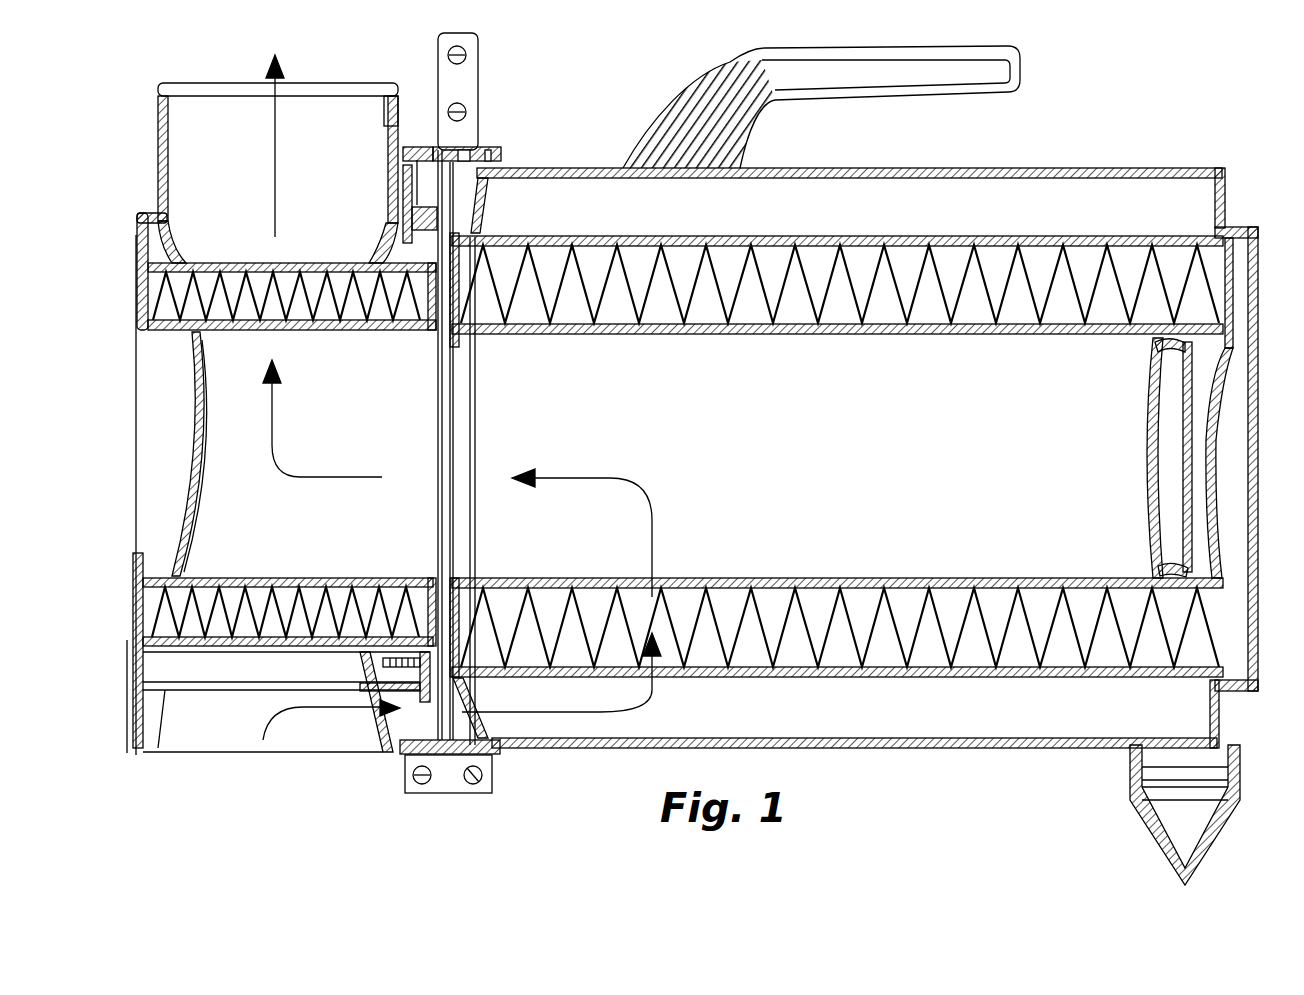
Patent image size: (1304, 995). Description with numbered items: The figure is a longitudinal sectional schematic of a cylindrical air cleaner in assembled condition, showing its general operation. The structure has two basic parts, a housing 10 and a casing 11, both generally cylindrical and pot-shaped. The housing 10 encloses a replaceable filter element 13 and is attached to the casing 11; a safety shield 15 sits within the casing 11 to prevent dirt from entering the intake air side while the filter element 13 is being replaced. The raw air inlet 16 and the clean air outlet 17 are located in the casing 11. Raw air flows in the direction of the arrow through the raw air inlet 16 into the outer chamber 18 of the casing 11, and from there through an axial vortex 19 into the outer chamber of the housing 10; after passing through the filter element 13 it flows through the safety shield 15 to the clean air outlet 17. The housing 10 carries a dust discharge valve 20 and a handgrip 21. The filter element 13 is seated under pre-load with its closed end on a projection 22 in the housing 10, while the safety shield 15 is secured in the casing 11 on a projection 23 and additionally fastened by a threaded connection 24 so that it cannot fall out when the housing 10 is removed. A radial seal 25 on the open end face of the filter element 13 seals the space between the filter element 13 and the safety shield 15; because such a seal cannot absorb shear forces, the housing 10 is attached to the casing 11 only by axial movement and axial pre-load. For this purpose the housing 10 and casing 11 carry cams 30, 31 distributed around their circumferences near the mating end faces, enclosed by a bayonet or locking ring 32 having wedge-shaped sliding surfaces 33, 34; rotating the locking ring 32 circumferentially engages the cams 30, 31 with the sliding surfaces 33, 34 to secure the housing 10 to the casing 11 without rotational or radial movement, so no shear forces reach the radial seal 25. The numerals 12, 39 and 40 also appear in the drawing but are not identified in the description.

The housing 10 is at (948, 168).
The casing 11 is at (145, 228).
The lower chamber wall 12 is at (150, 650).
The filter element 13 is at (918, 330).
The safety shield 15 is at (253, 627).
The raw air inlet 16 is at (295, 735).
The clean air outlet 17 is at (305, 115).
The outer chamber 18 is at (385, 722).
The axial vortex 19 is at (475, 735).
The dust discharge valve 20 is at (1130, 822).
The handgrip 21 is at (1003, 55).
The projection 22 is at (1240, 350).
The projection 23 is at (153, 342).
The threaded connection 24 is at (383, 662).
The radial seal 25 is at (440, 585).
The cam 30 is at (462, 140).
The cam 31 is at (433, 148).
The locking ring 32 is at (485, 760).
The sliding surface 33 is at (470, 140).
The sliding surface 34 is at (388, 122).
The connecting web 39 is at (493, 175).
The retaining bar 40 is at (403, 170).